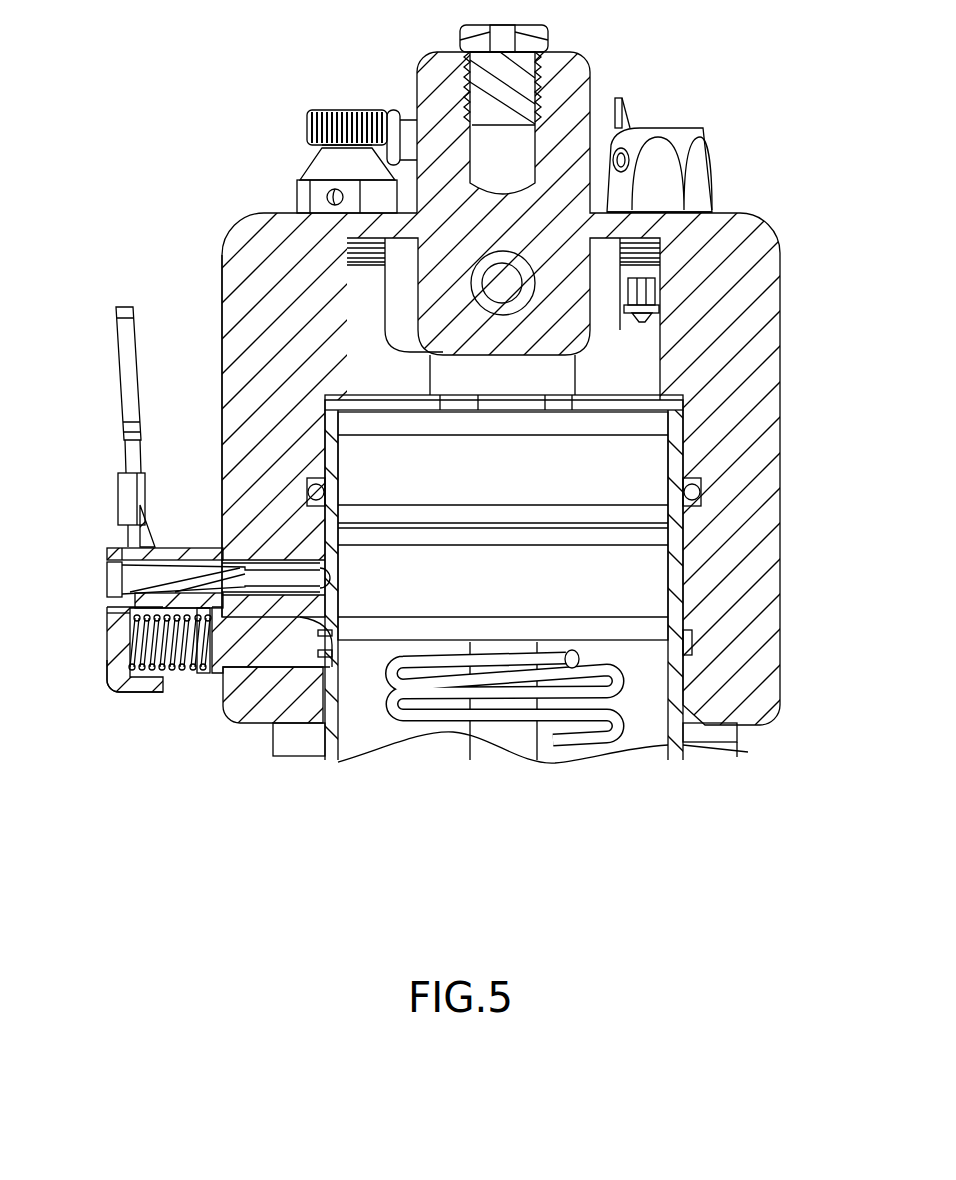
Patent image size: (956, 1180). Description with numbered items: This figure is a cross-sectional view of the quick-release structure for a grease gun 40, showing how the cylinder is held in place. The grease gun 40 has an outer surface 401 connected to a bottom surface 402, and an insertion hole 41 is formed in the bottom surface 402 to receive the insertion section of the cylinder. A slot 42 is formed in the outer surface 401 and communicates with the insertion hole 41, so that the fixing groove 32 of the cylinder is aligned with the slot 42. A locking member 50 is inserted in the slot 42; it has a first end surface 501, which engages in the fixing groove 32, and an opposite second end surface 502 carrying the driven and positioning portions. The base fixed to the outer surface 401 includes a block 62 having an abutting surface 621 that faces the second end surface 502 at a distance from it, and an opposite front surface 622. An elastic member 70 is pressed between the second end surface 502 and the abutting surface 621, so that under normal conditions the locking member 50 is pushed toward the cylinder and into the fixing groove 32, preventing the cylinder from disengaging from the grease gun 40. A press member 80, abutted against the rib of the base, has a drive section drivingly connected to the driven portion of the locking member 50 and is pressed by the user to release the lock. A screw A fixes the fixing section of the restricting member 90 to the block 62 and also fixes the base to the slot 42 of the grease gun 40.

The grease gun 40 is at (760, 204).
The outer surface 401 is at (222, 325).
The bottom surface 402 is at (252, 728).
The insertion hole 41 is at (690, 390).
The slot 42 is at (340, 625).
The fixing groove 32 is at (692, 640).
The locking member 50 is at (285, 647).
The first end surface 501 is at (340, 645).
The second end surface 502 is at (207, 673).
The block 62 is at (137, 692).
The abutting surface 621 is at (122, 620).
The front surface 622 is at (105, 667).
The elastic member 70 is at (175, 670).
The press member 80 is at (112, 328).
The restricting member 90 is at (128, 497).
The screw A is at (130, 573).